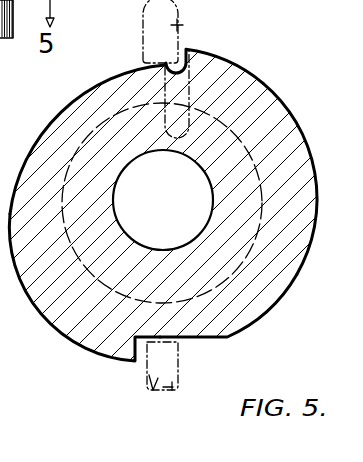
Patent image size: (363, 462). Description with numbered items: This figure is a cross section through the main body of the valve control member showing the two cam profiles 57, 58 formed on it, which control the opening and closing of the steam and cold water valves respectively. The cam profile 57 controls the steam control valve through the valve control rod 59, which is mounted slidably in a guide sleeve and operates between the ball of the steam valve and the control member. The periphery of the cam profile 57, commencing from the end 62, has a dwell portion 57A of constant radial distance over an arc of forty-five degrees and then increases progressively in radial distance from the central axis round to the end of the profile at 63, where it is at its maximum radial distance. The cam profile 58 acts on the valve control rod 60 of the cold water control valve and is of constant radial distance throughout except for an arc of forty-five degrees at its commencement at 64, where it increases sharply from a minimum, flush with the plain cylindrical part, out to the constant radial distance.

The cam profile 57 is at (181, 218).
The dwell portion 57A is at (108, 73).
The cam profile 58 is at (297, 122).
The valve control rod 59 is at (185, 25).
The valve control rod 60 is at (152, 391).
The end of cam profile 62 is at (168, 73).
The end of cam profile 63 is at (134, 363).
The commencement of cam profile 64 is at (197, 338).